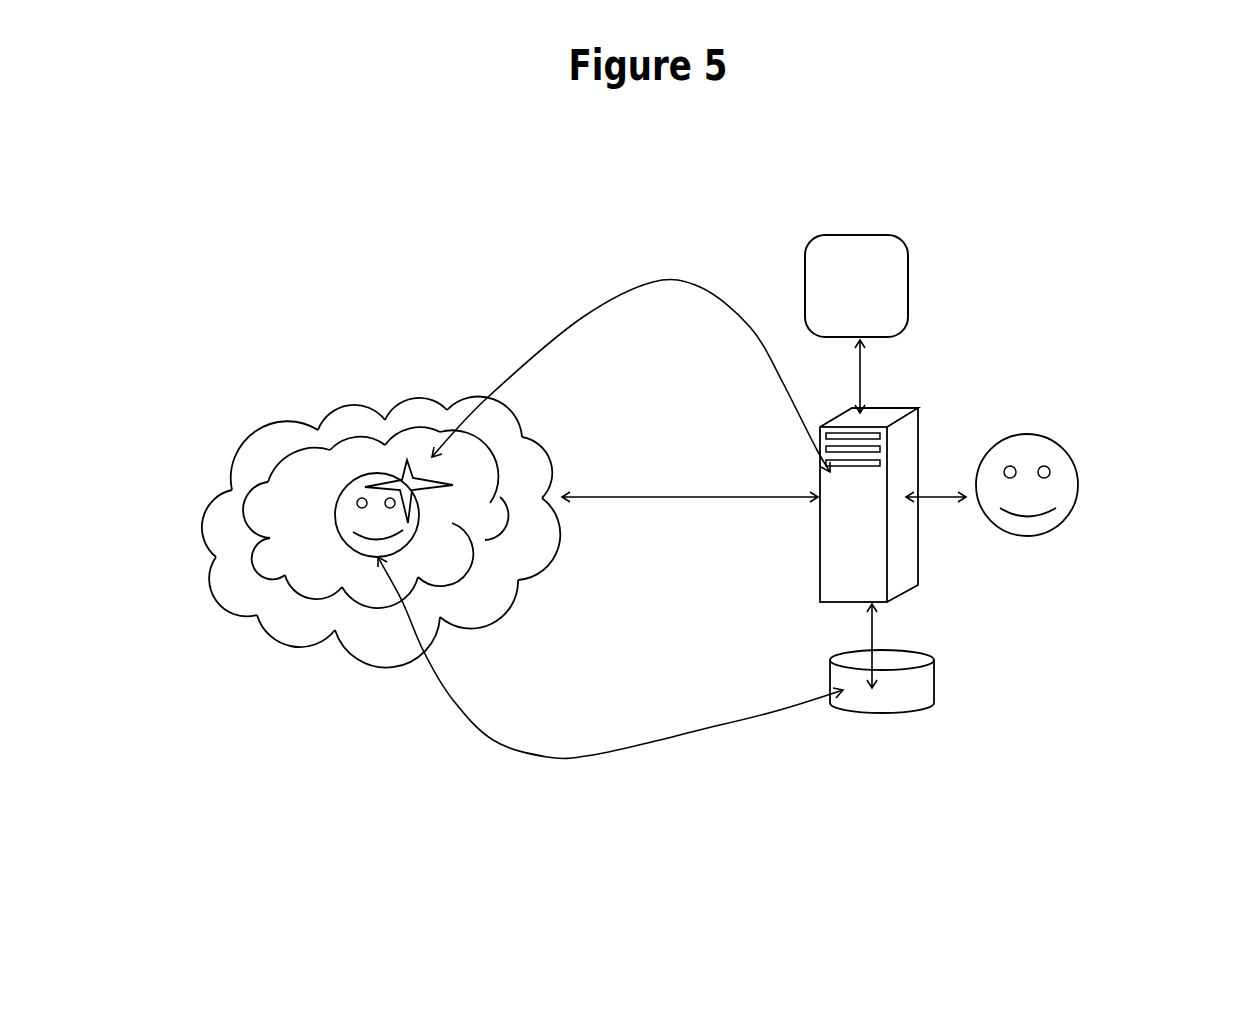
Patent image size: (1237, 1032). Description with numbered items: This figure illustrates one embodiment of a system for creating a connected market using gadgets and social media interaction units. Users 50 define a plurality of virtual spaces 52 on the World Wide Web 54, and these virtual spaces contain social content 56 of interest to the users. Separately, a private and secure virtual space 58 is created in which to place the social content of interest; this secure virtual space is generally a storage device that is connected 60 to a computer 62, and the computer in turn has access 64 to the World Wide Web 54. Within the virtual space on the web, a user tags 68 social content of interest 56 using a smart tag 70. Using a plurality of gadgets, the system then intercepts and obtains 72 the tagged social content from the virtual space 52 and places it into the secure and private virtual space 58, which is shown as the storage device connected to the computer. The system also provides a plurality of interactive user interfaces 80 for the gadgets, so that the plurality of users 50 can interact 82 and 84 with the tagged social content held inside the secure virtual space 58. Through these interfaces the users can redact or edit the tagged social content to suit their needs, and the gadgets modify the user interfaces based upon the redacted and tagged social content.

The users 50 is at (1064, 448).
The virtual spaces 52 is at (313, 448).
The World Wide Web 54 is at (372, 405).
The social content 56 is at (345, 490).
The private and secure virtual space 58 is at (945, 688).
The connection 60 is at (860, 627).
The computer 62 is at (907, 452).
The access 64 is at (620, 494).
The tagging 68 is at (688, 275).
The smart tag 70 is at (407, 457).
The intercepting and obtaining 72 is at (767, 725).
The interactive user interfaces 80 is at (887, 278).
The interaction 82 is at (954, 512).
The interaction 84 is at (873, 373).